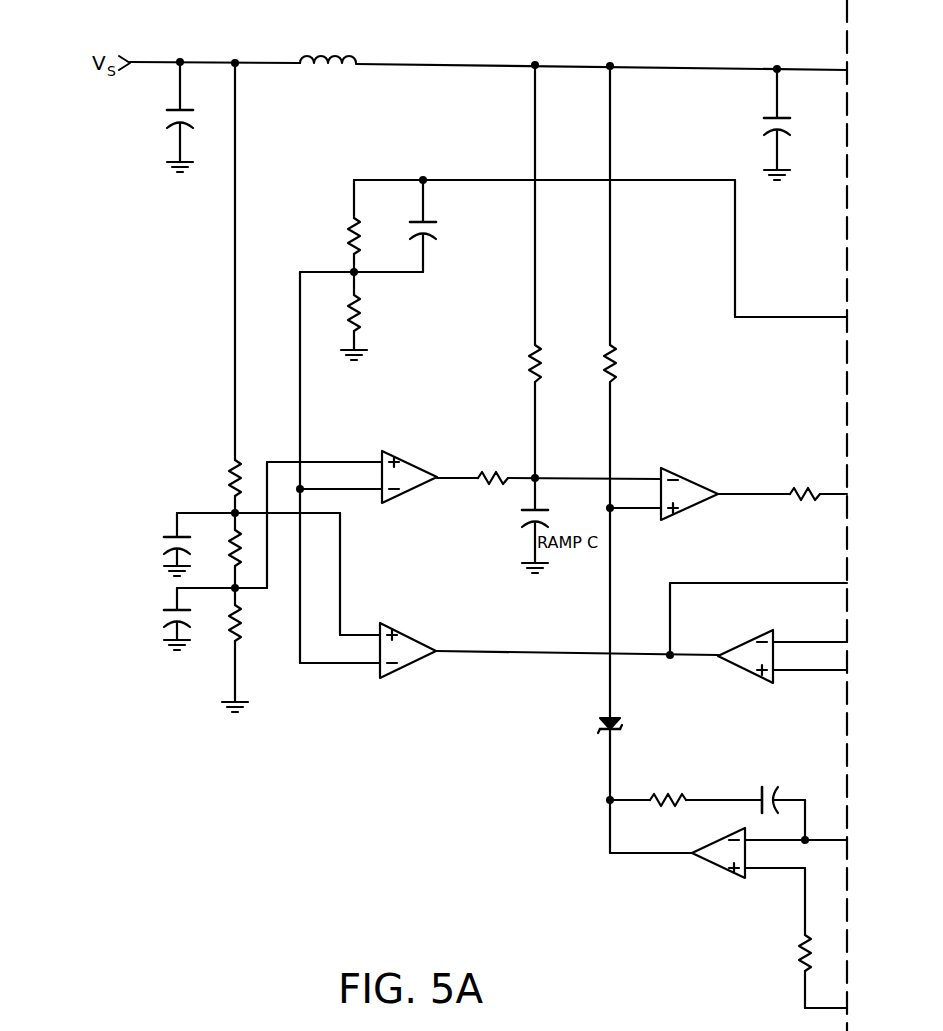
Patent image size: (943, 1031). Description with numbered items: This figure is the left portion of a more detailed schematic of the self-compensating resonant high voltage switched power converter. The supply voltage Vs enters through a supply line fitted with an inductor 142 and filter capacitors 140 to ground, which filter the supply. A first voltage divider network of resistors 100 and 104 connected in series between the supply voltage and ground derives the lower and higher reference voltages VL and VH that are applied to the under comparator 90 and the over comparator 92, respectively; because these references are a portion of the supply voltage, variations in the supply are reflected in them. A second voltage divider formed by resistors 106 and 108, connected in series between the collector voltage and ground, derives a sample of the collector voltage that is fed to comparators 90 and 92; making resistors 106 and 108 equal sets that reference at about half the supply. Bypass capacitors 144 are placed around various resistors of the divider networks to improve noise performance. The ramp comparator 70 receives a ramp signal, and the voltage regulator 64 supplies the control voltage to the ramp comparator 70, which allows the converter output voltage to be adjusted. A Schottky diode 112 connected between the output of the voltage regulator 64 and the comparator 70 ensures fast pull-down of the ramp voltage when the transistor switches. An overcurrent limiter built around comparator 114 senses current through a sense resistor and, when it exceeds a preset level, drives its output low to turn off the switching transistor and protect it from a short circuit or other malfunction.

The inductor 142 is at (348, 58).
The filter capacitors 140 is at (174, 113).
The resistor 106 is at (350, 238).
The bypass capacitors 144 is at (160, 541).
The resistor 108 is at (362, 314).
The resistor 100 is at (230, 548).
The resistor 104 is at (246, 628).
The under comparator 90 is at (414, 470).
The over comparator 92 is at (408, 662).
The ramp comparator 70 is at (690, 490).
The comparator 114 is at (748, 645).
The Schottky diode 112 is at (617, 733).
The voltage regulator 64 is at (718, 846).